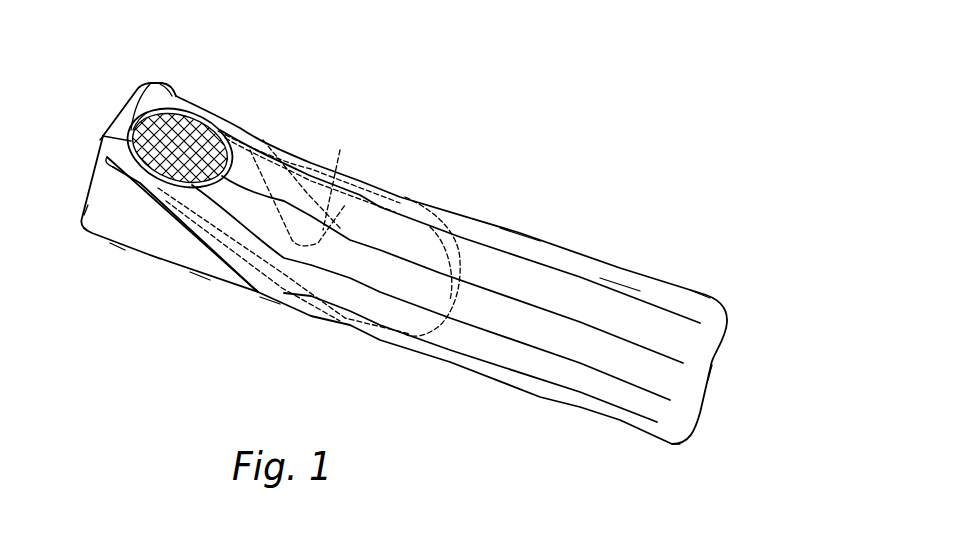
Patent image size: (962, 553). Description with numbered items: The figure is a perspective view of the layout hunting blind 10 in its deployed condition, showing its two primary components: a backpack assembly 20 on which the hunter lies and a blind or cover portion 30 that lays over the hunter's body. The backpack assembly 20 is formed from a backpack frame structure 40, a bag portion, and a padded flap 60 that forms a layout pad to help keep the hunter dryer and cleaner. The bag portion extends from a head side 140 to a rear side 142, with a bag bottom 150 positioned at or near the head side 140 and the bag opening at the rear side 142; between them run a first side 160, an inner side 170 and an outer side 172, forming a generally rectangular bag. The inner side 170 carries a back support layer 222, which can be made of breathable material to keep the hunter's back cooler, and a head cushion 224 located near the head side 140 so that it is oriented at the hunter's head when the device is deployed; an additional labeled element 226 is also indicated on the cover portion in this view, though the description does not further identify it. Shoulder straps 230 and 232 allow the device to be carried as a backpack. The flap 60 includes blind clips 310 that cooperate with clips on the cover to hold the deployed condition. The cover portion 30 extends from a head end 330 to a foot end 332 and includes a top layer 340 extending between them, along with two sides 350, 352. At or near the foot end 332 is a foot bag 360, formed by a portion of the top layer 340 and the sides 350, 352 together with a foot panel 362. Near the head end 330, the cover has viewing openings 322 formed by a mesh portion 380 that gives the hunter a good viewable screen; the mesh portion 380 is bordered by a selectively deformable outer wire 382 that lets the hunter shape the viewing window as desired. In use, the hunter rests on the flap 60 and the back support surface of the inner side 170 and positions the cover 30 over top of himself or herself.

The layout hunting blind 10 is at (585, 136).
The backpack assembly 20 is at (120, 256).
The blind or cover portion 30 is at (716, 378).
The backpack frame structure 40 is at (345, 205).
The padded flap 60 is at (438, 324).
The head side 140 is at (92, 177).
The rear side 142 is at (268, 300).
The bag bottom 150 is at (88, 212).
The first side 160 is at (146, 233).
The inner side 170 is at (272, 262).
The outer side 172 is at (200, 277).
The back support layer 222 is at (295, 258).
The head cushion 224 is at (133, 103).
The distal end 226 is at (706, 282).
The shoulder strap 230 is at (116, 247).
The shoulder strap 232 is at (325, 240).
The blind clip 310 is at (405, 192).
The viewing opening 322 is at (137, 127).
The head end 330 is at (183, 110).
The foot end 332 is at (705, 400).
The top layer 340 is at (618, 280).
The side 350 is at (540, 398).
The side 352 is at (522, 238).
The foot bag 360 is at (696, 450).
The foot panel 362 is at (727, 326).
The mesh portion 380 is at (200, 117).
The outer wire 382 is at (163, 100).